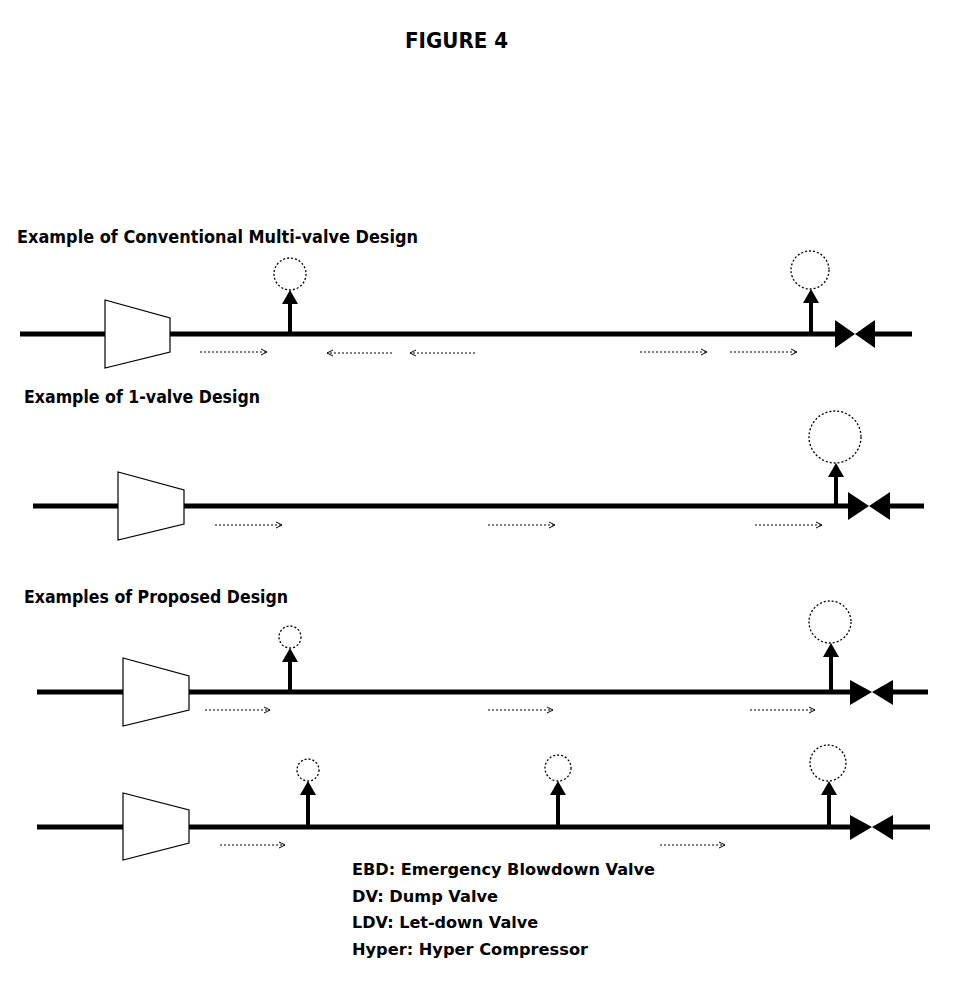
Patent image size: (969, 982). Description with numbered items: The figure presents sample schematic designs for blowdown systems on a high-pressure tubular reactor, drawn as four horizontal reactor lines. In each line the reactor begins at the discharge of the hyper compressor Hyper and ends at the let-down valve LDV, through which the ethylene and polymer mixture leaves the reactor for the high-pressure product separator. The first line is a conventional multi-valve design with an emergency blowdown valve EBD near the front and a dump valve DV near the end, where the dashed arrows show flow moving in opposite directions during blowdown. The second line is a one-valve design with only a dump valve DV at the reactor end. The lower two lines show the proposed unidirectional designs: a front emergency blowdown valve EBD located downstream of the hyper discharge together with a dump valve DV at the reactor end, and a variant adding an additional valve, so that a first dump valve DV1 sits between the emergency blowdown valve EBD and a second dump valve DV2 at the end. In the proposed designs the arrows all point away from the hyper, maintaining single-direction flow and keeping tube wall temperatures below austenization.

The Emergency Blowdown valve EBD is at (275, 542).
The Dump Valve DV is at (808, 471).
The first Dump Valve DV1 is at (538, 791).
The second Dump Valve DV2 is at (806, 786).
The Let-down Valve LDV is at (864, 572).
The Hyper Compressor Hyper is at (147, 580).